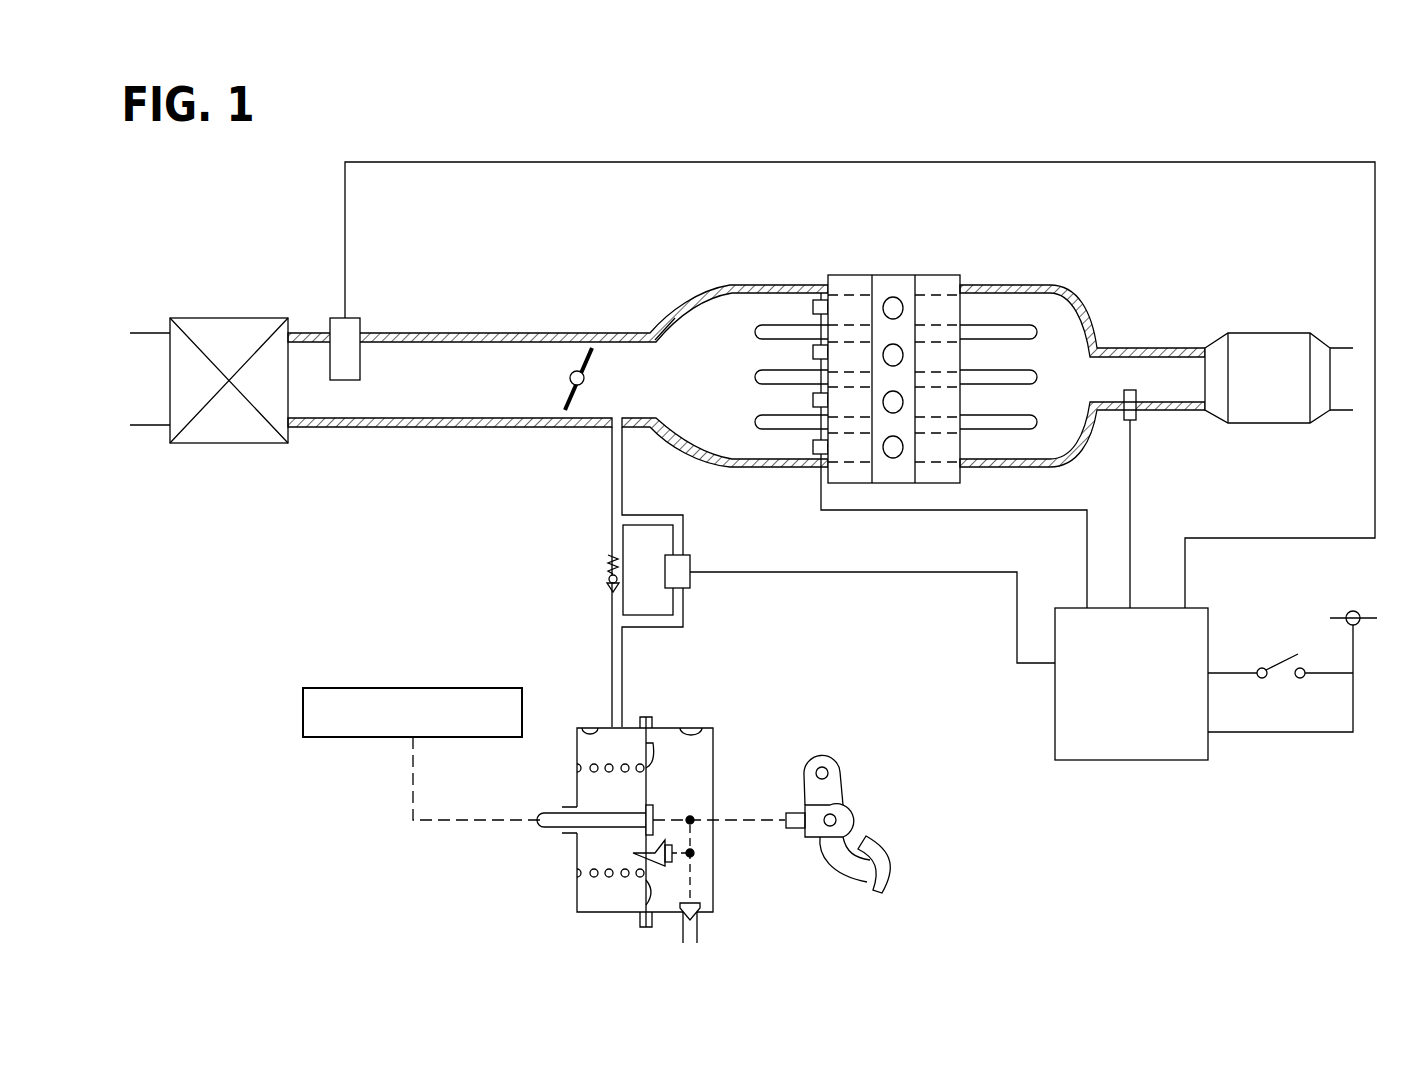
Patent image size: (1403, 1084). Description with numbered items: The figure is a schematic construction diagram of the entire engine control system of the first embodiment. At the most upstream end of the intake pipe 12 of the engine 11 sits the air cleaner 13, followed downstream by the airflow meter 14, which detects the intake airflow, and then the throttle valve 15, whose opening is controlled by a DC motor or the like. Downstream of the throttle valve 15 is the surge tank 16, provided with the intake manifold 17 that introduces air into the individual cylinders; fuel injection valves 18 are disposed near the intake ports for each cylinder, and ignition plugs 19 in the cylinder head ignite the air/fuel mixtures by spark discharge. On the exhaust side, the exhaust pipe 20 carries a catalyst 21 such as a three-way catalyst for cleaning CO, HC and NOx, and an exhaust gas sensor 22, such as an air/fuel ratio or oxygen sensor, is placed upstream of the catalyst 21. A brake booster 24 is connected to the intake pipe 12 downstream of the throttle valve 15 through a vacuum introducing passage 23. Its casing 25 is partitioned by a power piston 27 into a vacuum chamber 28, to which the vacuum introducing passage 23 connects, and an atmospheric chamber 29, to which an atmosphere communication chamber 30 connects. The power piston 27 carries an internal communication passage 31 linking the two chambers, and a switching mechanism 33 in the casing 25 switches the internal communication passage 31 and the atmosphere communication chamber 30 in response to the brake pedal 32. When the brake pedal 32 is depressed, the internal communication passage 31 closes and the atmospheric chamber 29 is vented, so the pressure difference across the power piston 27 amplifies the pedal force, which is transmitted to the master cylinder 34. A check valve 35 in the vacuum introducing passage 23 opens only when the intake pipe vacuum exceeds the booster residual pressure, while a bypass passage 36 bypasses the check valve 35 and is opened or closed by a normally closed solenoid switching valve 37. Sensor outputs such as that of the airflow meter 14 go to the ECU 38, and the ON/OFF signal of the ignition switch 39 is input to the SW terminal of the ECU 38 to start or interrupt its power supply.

The engine 11 is at (945, 272).
The intake pipe 12 is at (445, 333).
The air cleaner 13 is at (232, 318).
The airflow meter 14 is at (347, 318).
The throttle valve 15 is at (568, 340).
The surge tank 16 is at (683, 300).
The intake manifold 17 is at (790, 285).
The fuel injection valve 18 is at (814, 295).
The ignition plug 19 is at (893, 290).
The exhaust pipe 20 is at (1150, 348).
The catalyst 21 is at (1265, 333).
The exhaust gas sensor 22 is at (1140, 418).
The vacuum introducing passage 23 is at (612, 468).
The brake booster 24 is at (664, 795).
The casing 25 is at (713, 762).
The power piston 27 is at (663, 745).
The vacuum chamber 28 is at (584, 727).
The atmospheric chamber 29 is at (698, 727).
The atmosphere communication chamber 30 is at (700, 930).
The internal communication passage 31 is at (633, 853).
The brake pedal 32 is at (888, 855).
The switching mechanism 33 is at (706, 864).
The master cylinder 34 is at (358, 688).
The check valve 35 is at (625, 575).
The bypass passage 36 is at (683, 538).
The switching valve 37 is at (690, 582).
The engine control unit (ECU) 38 is at (1128, 760).
The ignition switch 39 is at (1280, 660).